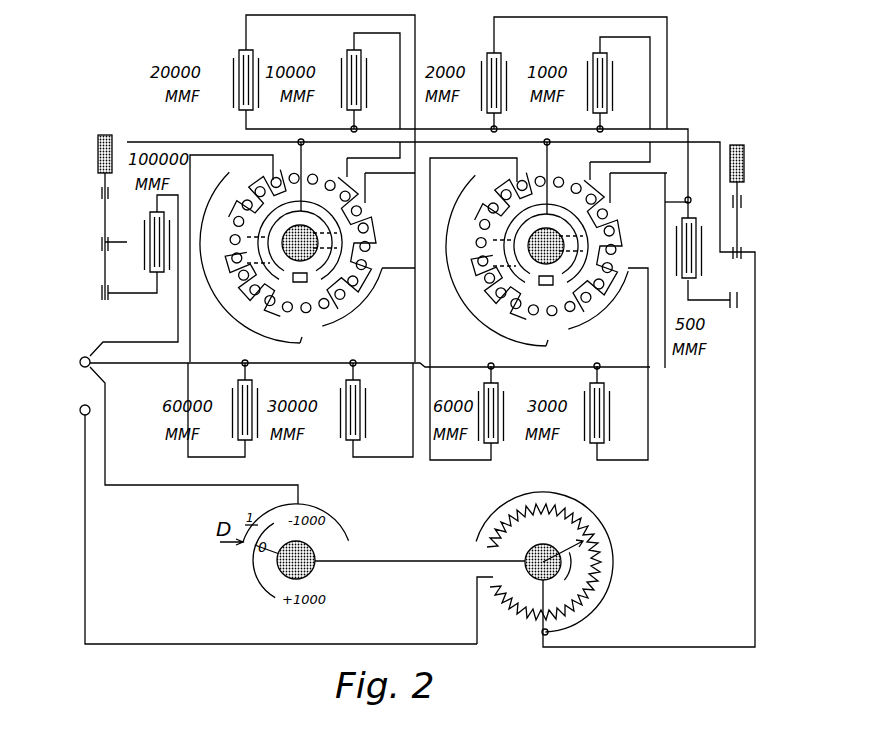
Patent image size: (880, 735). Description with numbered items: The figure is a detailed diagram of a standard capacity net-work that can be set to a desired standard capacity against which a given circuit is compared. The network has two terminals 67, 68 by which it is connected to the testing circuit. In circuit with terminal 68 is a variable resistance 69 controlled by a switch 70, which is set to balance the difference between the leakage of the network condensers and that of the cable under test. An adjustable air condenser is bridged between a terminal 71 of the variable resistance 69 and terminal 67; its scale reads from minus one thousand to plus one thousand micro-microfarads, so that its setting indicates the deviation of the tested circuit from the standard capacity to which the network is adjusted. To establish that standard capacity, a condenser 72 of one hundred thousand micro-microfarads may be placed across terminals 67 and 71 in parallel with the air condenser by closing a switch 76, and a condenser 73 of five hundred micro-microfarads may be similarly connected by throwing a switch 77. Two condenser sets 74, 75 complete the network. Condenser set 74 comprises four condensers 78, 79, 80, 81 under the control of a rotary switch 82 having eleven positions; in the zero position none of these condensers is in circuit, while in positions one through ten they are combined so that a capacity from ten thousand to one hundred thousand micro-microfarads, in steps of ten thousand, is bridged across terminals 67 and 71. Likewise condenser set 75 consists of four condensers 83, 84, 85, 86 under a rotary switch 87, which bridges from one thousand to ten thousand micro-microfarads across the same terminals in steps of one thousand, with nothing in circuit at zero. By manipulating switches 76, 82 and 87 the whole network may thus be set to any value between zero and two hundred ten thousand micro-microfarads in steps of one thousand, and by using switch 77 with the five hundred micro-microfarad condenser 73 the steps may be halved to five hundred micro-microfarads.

The terminal 67 is at (80, 362).
The terminal 68 is at (80, 410).
The variable resistance 69 is at (598, 590).
The switch 70 is at (554, 573).
The terminal of variable resistance 71 is at (544, 562).
The condenser 72 is at (143, 263).
The condenser 73 is at (697, 273).
The condenser set 74 is at (300, 250).
The condenser set 75 is at (546, 253).
The switch 76 is at (102, 217).
The switch 77 is at (739, 232).
The condenser 78 is at (345, 50).
The condenser 79 is at (257, 60).
The condenser 80 is at (345, 445).
The condenser 81 is at (247, 440).
The rotary switch 82 is at (248, 262).
The condenser 83 is at (594, 50).
The condenser 84 is at (505, 62).
The condenser 85 is at (592, 447).
The condenser 86 is at (493, 443).
The rotary switch 87 is at (494, 265).